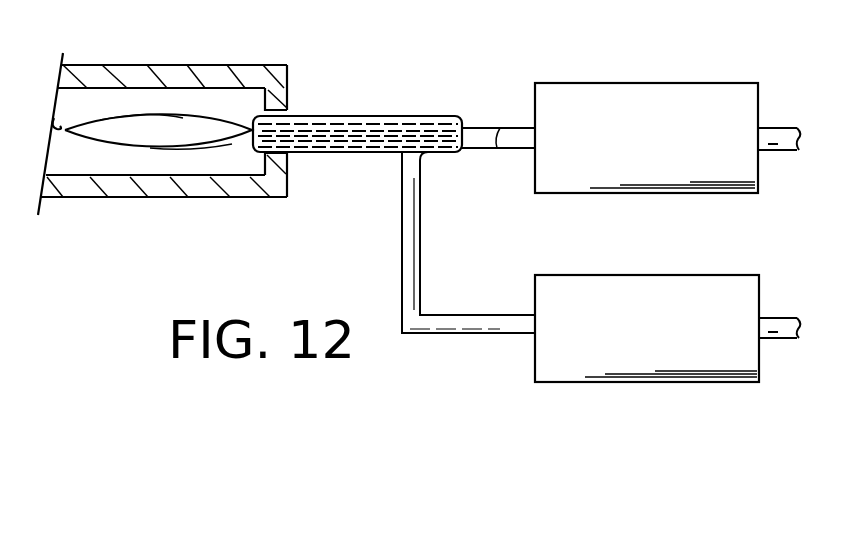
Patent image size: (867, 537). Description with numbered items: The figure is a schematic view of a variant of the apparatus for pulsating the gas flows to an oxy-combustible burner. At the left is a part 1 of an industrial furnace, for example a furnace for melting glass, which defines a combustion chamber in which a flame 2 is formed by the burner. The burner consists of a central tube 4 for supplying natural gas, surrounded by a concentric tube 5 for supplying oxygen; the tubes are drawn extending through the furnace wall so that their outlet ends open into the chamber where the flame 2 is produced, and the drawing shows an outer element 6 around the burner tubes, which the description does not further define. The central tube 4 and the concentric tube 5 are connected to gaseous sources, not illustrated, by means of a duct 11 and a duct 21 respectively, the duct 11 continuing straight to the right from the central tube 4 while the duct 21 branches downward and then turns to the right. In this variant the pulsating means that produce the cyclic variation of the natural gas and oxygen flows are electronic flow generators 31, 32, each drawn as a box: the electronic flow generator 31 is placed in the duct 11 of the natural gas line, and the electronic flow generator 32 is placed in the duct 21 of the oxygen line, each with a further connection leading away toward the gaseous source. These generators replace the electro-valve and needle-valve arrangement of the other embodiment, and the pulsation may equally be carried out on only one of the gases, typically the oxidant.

The part defining a combustion chamber 1 is at (91, 95).
The flame 2 is at (194, 122).
The central tube 4 is at (358, 133).
The concentric tube 5 is at (375, 154).
The protective sheath 6 is at (325, 127).
The duct 11 is at (487, 134).
The duct 21 is at (412, 198).
The electronic flow generator 31 is at (663, 155).
The electronic flow generator 32 is at (628, 338).